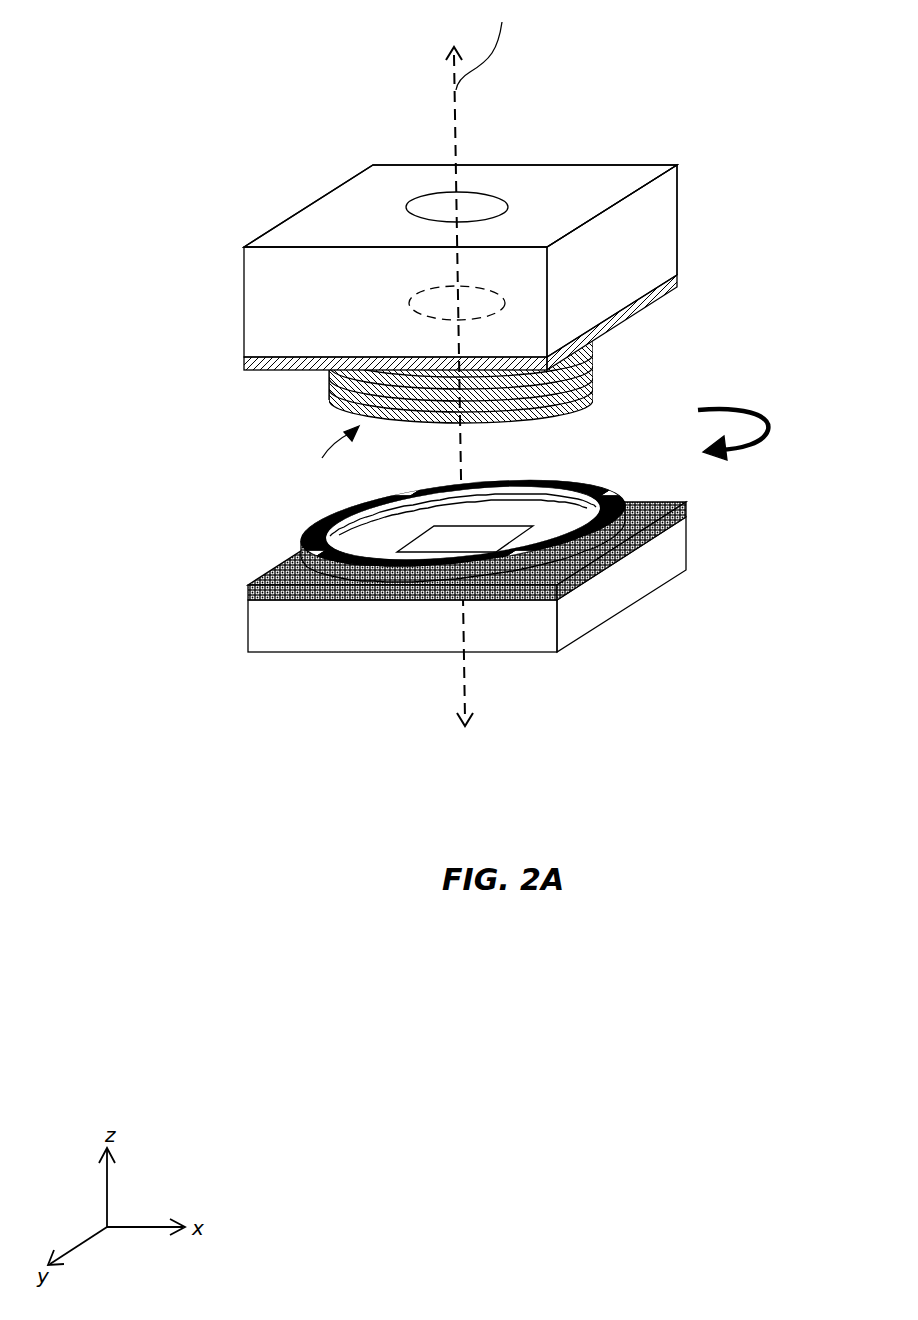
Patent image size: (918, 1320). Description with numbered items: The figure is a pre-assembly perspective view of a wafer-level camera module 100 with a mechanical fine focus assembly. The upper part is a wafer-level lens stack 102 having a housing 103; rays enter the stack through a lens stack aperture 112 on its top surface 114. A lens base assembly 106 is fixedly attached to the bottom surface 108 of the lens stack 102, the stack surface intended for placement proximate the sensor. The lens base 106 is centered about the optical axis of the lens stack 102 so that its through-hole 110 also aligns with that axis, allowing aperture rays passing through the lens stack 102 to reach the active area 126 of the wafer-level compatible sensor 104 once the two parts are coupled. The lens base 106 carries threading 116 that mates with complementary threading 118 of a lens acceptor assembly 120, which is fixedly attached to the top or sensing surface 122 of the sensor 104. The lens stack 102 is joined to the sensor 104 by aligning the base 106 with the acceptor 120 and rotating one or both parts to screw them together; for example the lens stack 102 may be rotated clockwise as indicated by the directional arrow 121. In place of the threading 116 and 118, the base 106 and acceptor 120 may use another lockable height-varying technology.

The pre-assembly camera module 100 is at (240, 78).
The wafer-level lens stack 102 is at (318, 336).
The housing 103 is at (678, 231).
The wafer-level compatible sensor 104 is at (318, 630).
The lens base assembly 106 is at (598, 364).
The bottom surface 108 is at (652, 308).
The through-hole 110 is at (329, 457).
The lens stack aperture 112 is at (501, 195).
The top surface 114 is at (615, 170).
The threading 116 is at (329, 388).
The complimentary threading 118 is at (386, 514).
The lens acceptor assembly 120 is at (305, 535).
The directional arrow 121 is at (762, 418).
The sensing surface 122 is at (656, 546).
The active area 126 is at (520, 536).